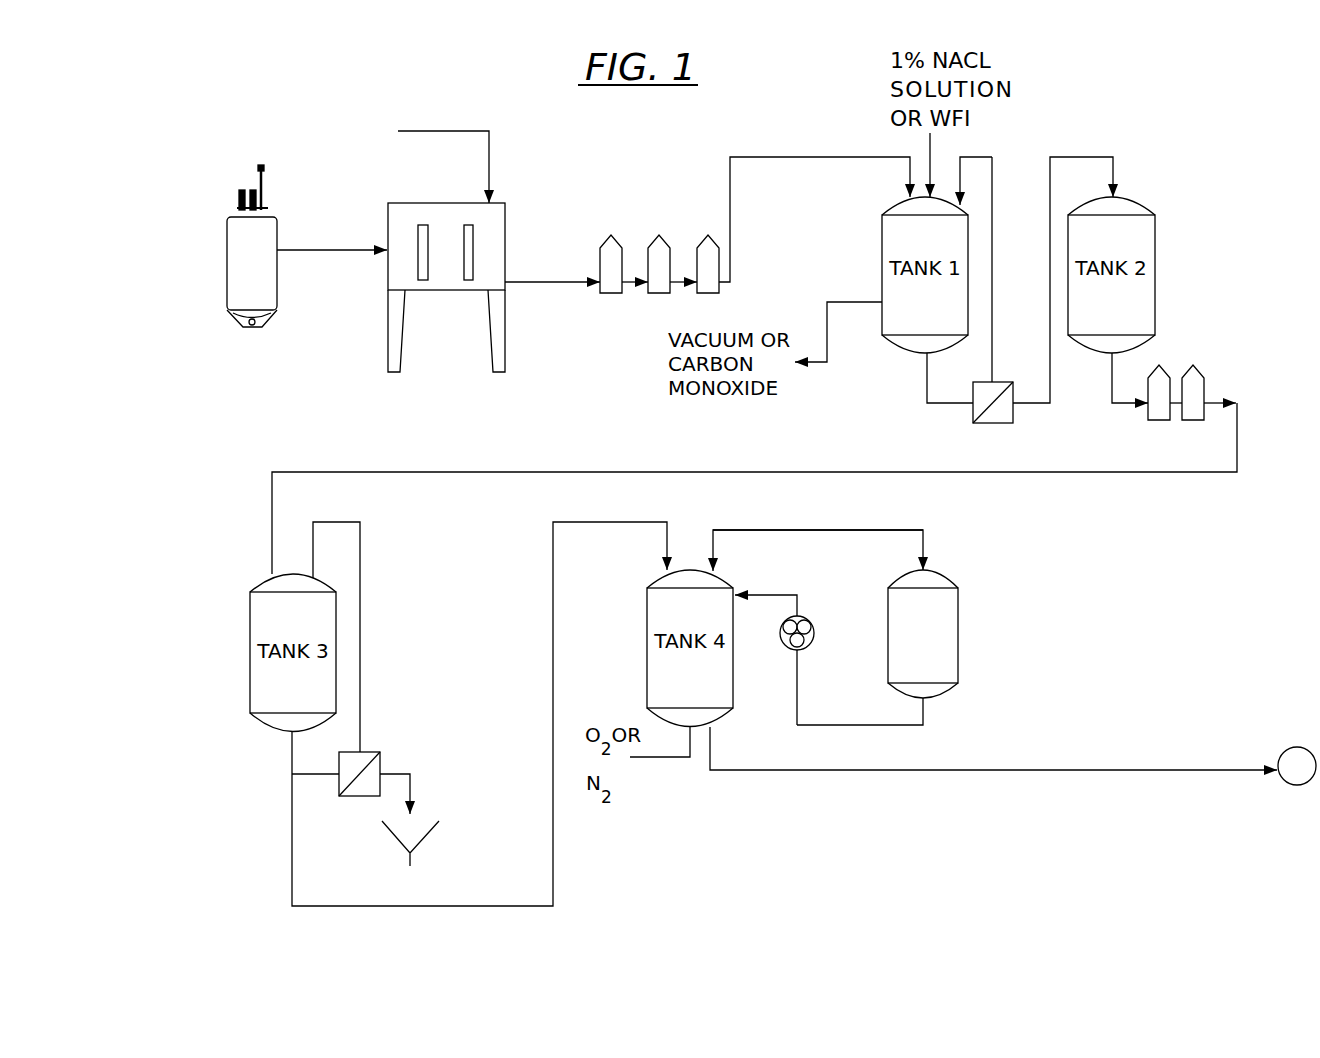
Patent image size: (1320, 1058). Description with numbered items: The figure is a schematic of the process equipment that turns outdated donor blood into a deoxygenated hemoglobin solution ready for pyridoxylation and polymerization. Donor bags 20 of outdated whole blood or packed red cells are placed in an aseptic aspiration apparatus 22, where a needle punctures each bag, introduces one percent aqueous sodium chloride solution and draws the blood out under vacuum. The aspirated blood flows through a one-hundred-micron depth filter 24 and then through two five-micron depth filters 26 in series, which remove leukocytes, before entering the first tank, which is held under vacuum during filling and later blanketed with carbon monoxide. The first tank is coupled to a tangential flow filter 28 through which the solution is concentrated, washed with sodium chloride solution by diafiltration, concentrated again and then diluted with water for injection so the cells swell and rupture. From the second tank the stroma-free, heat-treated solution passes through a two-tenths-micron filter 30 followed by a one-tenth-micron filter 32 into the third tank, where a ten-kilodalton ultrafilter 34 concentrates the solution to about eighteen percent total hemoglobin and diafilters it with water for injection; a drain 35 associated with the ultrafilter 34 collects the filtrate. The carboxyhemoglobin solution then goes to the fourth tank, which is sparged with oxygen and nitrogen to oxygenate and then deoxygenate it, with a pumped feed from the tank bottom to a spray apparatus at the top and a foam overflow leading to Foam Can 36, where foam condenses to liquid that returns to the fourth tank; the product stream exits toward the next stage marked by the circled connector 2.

The donor bags 20 is at (227, 278).
The aseptic aspiration apparatus 22 is at (398, 268).
The 100µ depth filter 24 is at (612, 293).
The 5µ depth filters 26 is at (708, 246).
The 0.65µ tangential flow filter 28 is at (986, 423).
The 0.2µ filter 30 is at (1158, 420).
The 0.1µ filter 32 is at (1204, 368).
The ultrafilter 34 is at (374, 752).
The drain 35 is at (435, 846).
The Foam Can 36 is at (958, 642).
The connector to FIG. 2 is at (1013, 756).